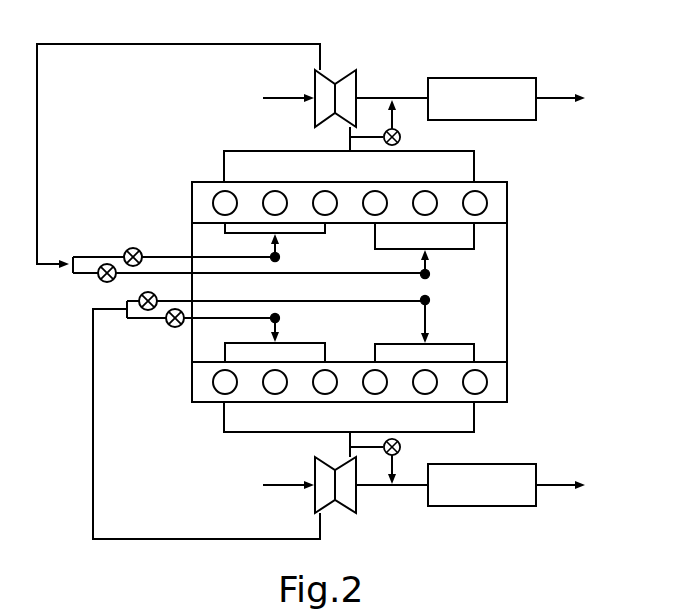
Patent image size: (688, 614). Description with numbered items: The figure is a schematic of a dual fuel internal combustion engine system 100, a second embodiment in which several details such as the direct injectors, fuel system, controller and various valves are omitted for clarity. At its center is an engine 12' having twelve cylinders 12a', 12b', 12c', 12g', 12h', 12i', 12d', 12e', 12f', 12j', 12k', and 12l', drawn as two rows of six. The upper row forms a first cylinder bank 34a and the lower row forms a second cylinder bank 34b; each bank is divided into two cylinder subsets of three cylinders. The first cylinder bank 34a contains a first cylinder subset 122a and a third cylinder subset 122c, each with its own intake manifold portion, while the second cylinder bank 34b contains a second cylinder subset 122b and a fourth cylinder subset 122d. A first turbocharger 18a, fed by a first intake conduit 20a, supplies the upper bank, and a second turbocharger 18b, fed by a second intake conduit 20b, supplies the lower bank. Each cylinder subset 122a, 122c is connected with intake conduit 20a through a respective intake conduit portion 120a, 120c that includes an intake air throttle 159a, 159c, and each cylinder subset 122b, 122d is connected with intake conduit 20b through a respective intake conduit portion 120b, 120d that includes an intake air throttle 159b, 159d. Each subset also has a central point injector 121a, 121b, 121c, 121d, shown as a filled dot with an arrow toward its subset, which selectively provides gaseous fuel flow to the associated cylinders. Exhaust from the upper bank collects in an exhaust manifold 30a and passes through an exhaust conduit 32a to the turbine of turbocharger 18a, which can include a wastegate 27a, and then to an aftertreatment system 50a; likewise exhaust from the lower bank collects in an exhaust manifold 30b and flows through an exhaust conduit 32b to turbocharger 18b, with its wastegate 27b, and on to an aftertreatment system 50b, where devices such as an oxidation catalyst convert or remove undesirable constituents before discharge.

The dual fuel internal combustion engine system 100 is at (618, 66).
The engine 12' is at (382, 292).
The cylinder 12a' is at (238, 186).
The cylinder 12b' is at (289, 186).
The cylinder 12c' is at (339, 186).
The cylinder 12g' is at (390, 186).
The cylinder 12h' is at (440, 186).
The cylinder 12i' is at (488, 186).
The cylinder 12d' is at (239, 399).
The cylinder 12e' is at (289, 399).
The cylinder 12f' is at (338, 399).
The cylinder 12j' is at (387, 399).
The cylinder 12k' is at (439, 399).
The cylinder 12l' is at (489, 399).
The first turbocharger 18a is at (360, 52).
The second turbocharger 18b is at (364, 540).
The first intake conduit 20a is at (276, 97).
The second intake conduit 20b is at (276, 487).
The wastegate 27a is at (401, 137).
The wastegate 27b is at (401, 447).
The exhaust manifold 30a is at (475, 151).
The exhaust manifold 30b is at (474, 432).
The exhaust conduit 32a is at (409, 97).
The exhaust conduit 32b is at (400, 487).
The first cylinder bank 34a is at (513, 190).
The second cylinder bank 34b is at (513, 372).
The aftertreatment system 50a is at (506, 99).
The aftertreatment system 50b is at (506, 485).
The intake conduit portion 120a is at (146, 255).
The intake conduit portion 120b is at (201, 320).
The intake conduit portion 120c is at (361, 271).
The intake conduit portion 120d is at (363, 303).
The central point injector 121a is at (280, 258).
The central point injector 121b is at (280, 319).
The central point injector 121c is at (430, 275).
The central point injector 121d is at (430, 301).
The first cylinder subset 122a is at (223, 229).
The second cylinder subset 122b is at (223, 353).
The third cylinder subset 122c is at (474, 240).
The fourth cylinder subset 122d is at (474, 352).
The intake air throttle 159a is at (130, 248).
The intake air throttle 159b is at (166, 320).
The intake air throttle 159c is at (98, 275).
The intake air throttle 159d is at (139, 300).